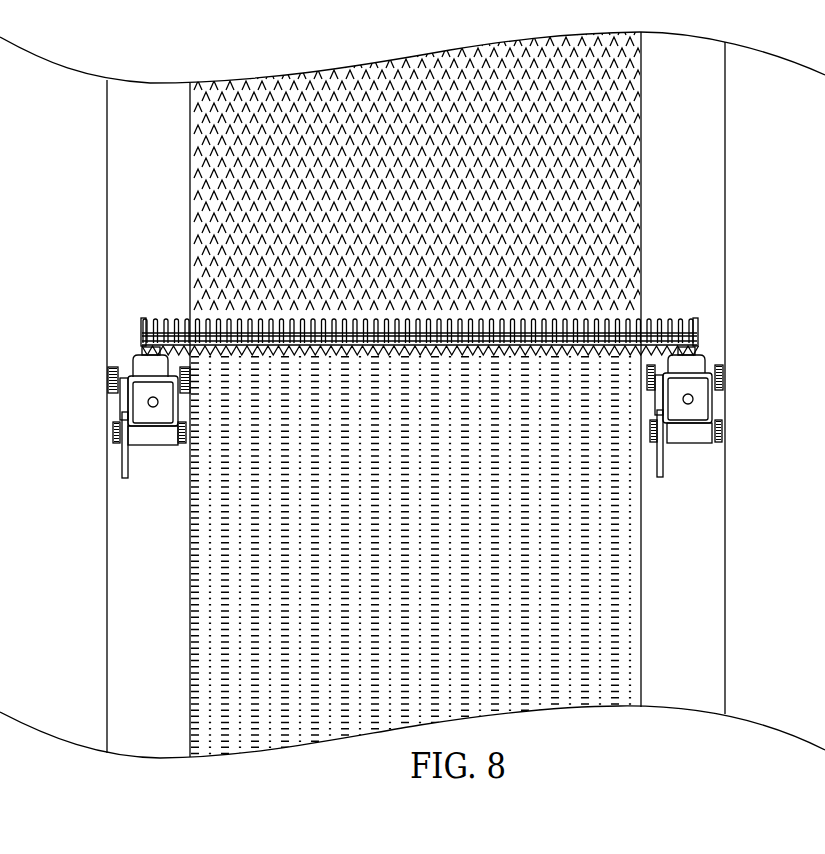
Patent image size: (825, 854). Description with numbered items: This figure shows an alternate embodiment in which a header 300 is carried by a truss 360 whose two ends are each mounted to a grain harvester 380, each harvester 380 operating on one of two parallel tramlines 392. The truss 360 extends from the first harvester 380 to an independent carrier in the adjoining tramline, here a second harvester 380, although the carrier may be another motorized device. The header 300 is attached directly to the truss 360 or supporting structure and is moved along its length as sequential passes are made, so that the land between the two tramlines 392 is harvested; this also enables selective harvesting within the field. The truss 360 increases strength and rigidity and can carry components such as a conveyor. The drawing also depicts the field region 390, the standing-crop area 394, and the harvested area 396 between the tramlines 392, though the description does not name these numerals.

The header 300 is at (175, 315).
The truss 360 is at (295, 357).
The harvester 380 is at (117, 408).
The web 390 is at (600, 32).
The tramlines 392 is at (160, 678).
The hook pattern region 394 is at (450, 67).
The embossed pattern region 396 is at (257, 718).